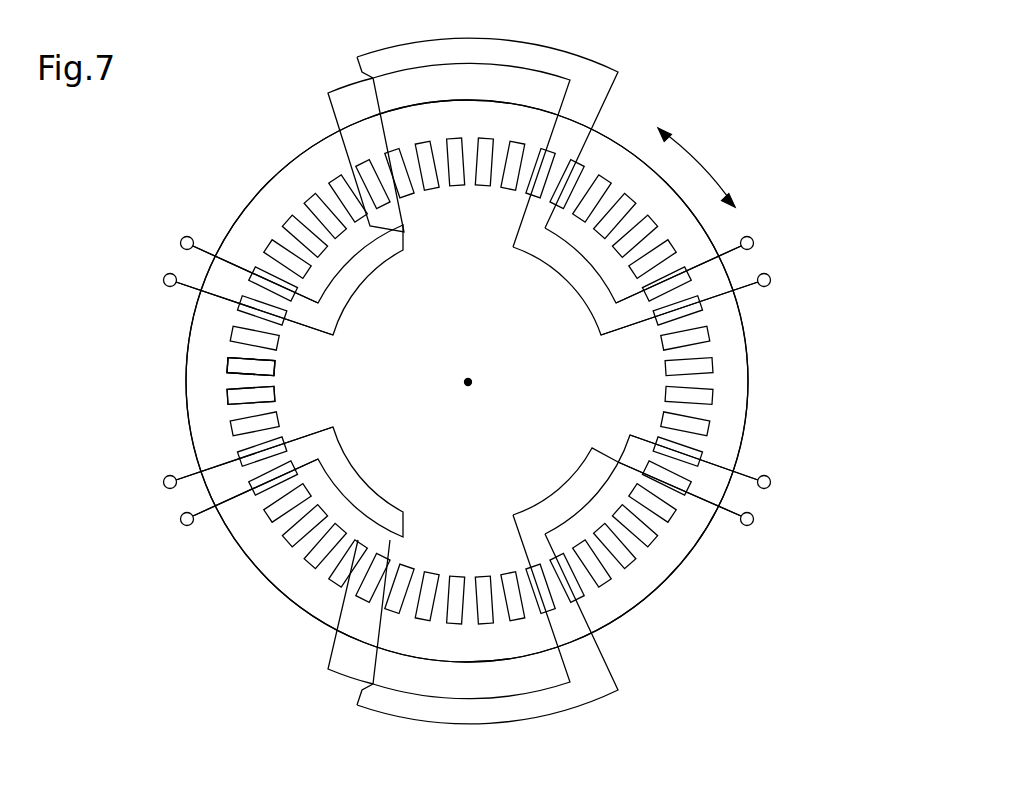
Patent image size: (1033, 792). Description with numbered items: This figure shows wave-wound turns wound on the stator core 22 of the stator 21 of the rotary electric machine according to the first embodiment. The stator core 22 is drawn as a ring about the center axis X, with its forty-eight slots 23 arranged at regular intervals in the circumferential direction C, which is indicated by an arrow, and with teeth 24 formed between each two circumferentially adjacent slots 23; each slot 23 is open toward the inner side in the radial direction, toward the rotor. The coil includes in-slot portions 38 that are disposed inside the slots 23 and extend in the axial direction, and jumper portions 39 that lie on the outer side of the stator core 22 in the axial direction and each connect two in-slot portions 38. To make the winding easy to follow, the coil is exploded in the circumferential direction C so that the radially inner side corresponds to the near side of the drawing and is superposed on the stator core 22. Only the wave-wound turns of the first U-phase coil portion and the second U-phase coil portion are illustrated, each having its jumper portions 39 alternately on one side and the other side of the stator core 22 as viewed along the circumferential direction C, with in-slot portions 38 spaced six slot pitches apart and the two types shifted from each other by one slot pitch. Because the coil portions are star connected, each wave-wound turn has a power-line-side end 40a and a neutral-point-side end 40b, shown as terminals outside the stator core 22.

The stator 21 is at (760, 83).
The stator core 22 is at (636, 598).
The slots 23 is at (223, 397).
The teeth 24 is at (268, 381).
The in-slot portions 38 is at (368, 190).
The jumper portions 39 is at (537, 64).
The power-line-side end 40a is at (165, 276).
The neutral-point-side end 40b is at (768, 275).
The center axis X is at (471, 385).
The circumferential direction C is at (696, 167).